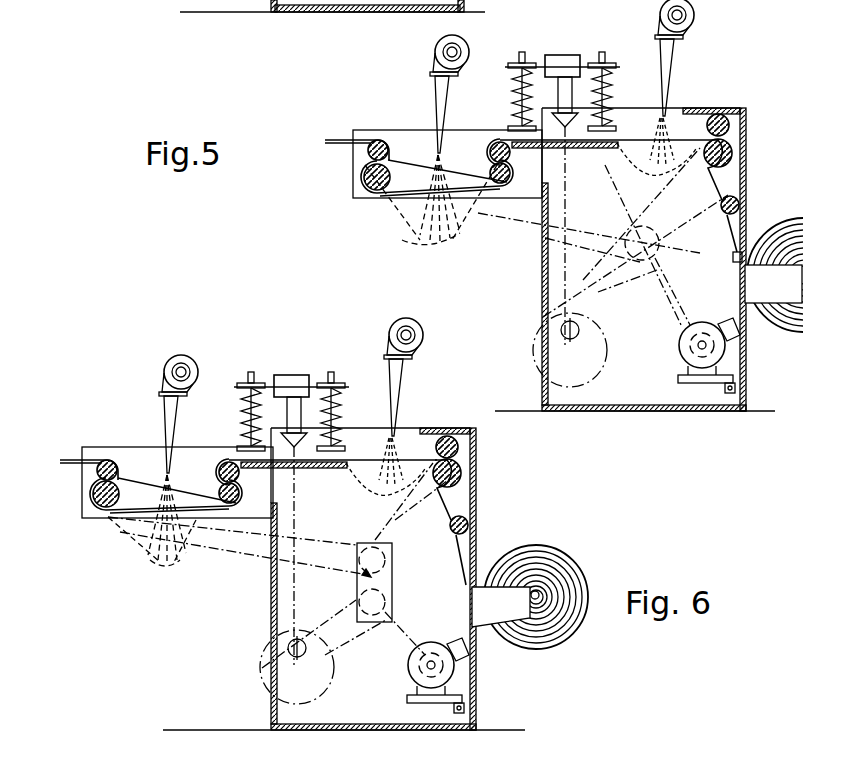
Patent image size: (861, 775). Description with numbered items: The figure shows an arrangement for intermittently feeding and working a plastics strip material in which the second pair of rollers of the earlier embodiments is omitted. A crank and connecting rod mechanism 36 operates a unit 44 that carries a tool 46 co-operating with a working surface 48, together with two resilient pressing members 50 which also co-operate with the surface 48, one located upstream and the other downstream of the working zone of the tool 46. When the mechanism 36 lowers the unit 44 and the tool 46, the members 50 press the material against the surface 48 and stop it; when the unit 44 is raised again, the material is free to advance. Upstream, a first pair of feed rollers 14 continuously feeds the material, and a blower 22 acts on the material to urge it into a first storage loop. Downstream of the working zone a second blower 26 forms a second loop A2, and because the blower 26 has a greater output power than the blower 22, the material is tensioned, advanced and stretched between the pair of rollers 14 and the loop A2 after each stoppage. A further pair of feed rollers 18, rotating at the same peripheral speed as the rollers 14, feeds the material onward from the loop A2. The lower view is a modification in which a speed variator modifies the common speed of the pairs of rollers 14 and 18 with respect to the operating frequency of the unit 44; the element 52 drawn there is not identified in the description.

In FIG. 5, the first pair of feed rollers 14 is at (735, 122).
In FIG. 6, the first pair of feed rollers 14 is at (466, 455).
In FIG. 6, the further pair of feed rollers 18 is at (121, 465).
In FIG. 5, the blower 22 is at (675, 57).
In FIG. 5, the second blower 26 is at (432, 79).
In FIG. 5, the crank and connecting rod mechanism 36 is at (540, 327).
In FIG. 5, the unit 44 is at (554, 51).
In FIG. 6, the unit 44 is at (286, 368).
In FIG. 5, the tool 46 is at (580, 148).
In FIG. 5, the working surface 48 is at (510, 200).
In FIG. 5, the resilient pressing members 50 is at (518, 88).
In FIG. 6, the roller housing 52 is at (392, 582).
In FIG. 5, the second loop A2 is at (415, 237).